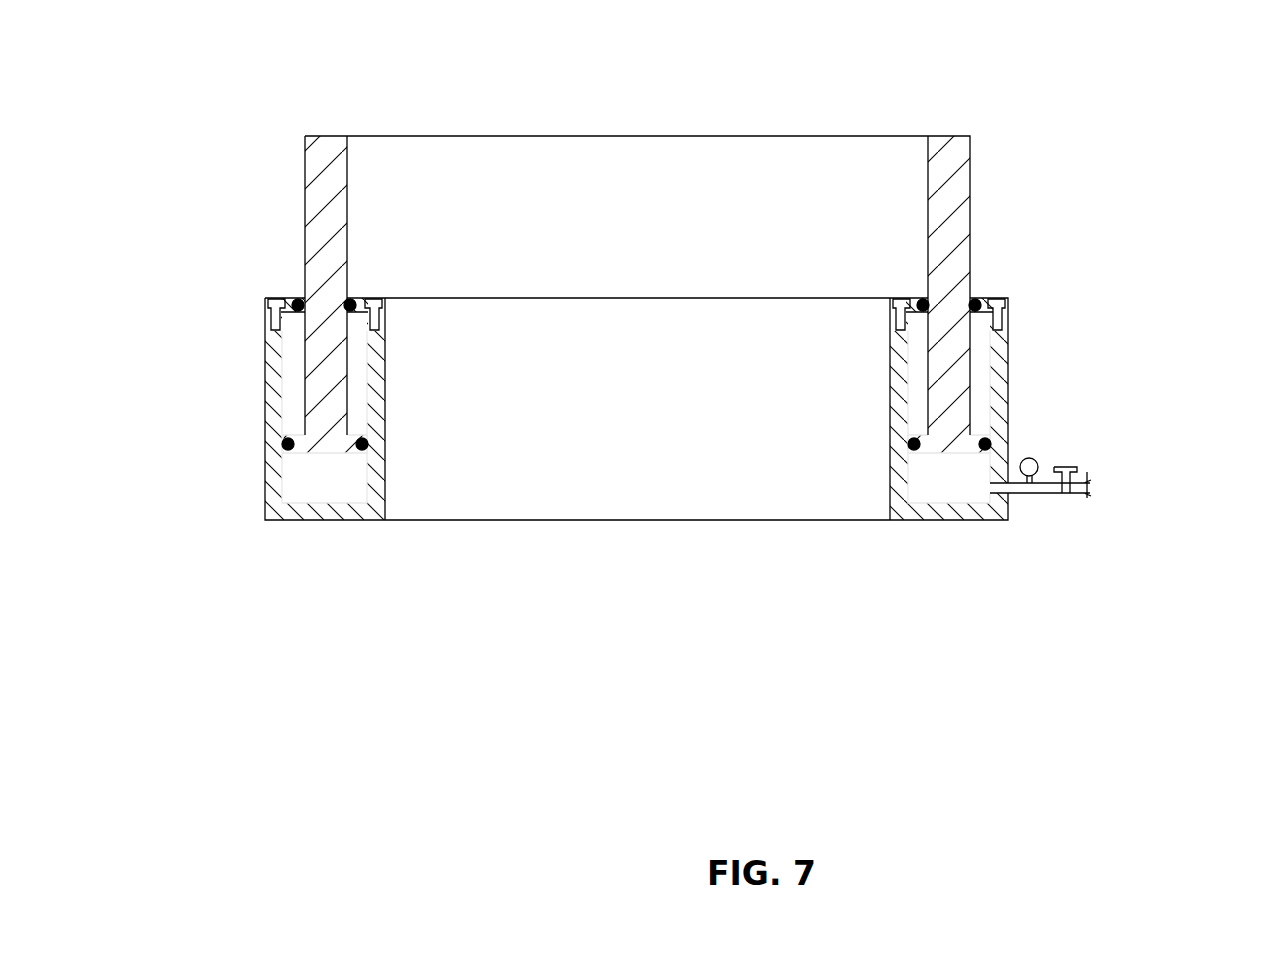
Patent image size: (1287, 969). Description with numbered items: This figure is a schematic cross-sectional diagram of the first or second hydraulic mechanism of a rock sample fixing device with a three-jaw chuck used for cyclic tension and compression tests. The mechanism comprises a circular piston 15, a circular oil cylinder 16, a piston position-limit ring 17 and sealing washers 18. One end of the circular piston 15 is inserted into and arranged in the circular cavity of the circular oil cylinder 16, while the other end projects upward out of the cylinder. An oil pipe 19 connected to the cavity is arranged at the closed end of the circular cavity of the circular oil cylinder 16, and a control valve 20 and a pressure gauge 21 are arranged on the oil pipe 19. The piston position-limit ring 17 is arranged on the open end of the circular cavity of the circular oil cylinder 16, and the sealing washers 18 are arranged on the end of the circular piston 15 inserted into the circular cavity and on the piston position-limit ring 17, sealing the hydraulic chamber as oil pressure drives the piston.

The circular piston 15 is at (957, 183).
The circular oil cylinder 16 is at (1002, 350).
The piston position-limit ring 17 is at (356, 303).
The sealing washers 18 is at (348, 300).
The oil pipe 19 is at (1022, 489).
The control valve 20 is at (1077, 465).
The pressure gauge 21 is at (1034, 460).